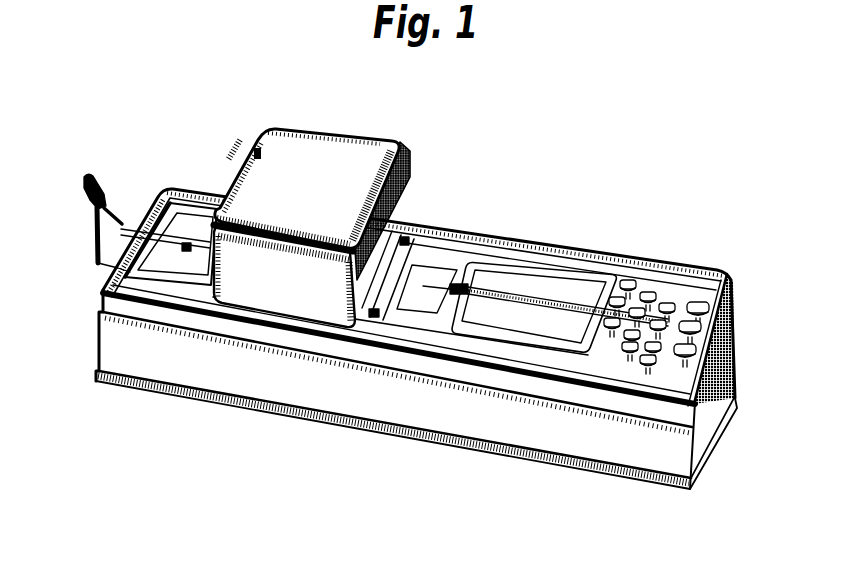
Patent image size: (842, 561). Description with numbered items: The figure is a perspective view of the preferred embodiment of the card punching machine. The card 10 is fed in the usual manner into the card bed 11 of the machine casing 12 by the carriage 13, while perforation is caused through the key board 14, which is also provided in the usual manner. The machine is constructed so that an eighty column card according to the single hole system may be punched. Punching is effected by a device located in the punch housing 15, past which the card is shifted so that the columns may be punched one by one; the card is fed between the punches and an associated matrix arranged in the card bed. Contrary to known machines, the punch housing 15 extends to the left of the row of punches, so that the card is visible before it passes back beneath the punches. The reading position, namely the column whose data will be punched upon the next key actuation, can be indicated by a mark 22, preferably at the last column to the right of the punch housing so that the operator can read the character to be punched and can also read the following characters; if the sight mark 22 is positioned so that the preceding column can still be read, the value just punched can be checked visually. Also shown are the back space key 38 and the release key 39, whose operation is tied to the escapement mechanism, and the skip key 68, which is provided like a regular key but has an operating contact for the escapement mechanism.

The card 10 is at (417, 268).
The card bed 11 is at (545, 288).
The machine casing 12 is at (165, 360).
The carriage 13 is at (186, 246).
The key board 14 is at (668, 306).
The punch housing 15 is at (365, 167).
The mark 22 is at (420, 237).
The back space key 38 is at (702, 303).
The release key 39 is at (703, 388).
The skip key 68 is at (702, 395).